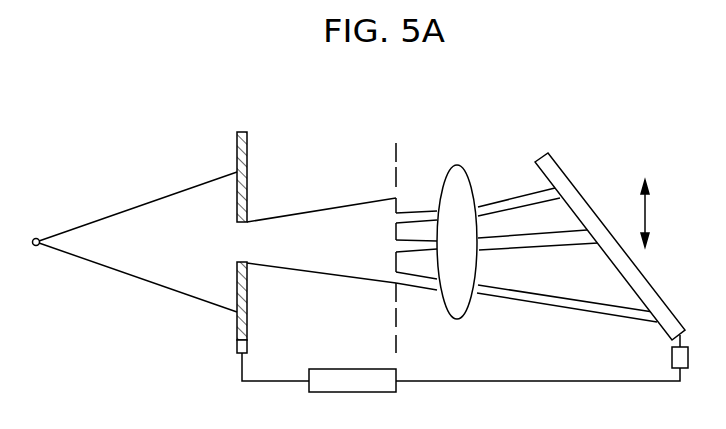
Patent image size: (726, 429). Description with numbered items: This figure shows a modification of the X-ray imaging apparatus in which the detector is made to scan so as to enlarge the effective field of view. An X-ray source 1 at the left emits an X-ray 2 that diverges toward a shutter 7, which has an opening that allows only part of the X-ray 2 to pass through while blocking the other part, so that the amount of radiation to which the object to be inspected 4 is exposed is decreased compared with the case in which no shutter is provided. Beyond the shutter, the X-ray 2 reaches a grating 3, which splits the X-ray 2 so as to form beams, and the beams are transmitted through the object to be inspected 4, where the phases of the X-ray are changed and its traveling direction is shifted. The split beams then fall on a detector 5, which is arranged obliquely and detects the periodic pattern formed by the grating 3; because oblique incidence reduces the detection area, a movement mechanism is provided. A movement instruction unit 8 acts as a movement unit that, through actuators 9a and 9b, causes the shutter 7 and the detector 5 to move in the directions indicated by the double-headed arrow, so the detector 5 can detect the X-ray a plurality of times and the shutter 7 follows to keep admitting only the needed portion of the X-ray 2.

The X-ray source 1 is at (35, 238).
The X-ray 2 is at (162, 196).
The grating 3 is at (393, 177).
The object to be inspected 4 is at (456, 163).
The detector 5 is at (545, 160).
The shutter 7 is at (240, 131).
The movement instruction unit 8 is at (354, 368).
The actuator 9a is at (249, 345).
The actuator 9b is at (671, 357).